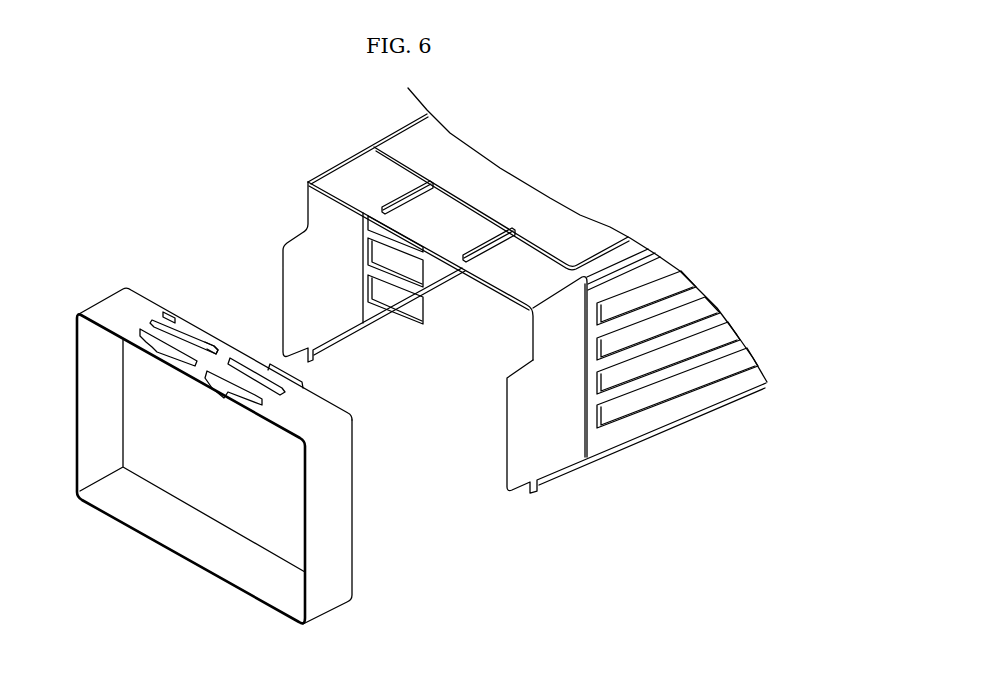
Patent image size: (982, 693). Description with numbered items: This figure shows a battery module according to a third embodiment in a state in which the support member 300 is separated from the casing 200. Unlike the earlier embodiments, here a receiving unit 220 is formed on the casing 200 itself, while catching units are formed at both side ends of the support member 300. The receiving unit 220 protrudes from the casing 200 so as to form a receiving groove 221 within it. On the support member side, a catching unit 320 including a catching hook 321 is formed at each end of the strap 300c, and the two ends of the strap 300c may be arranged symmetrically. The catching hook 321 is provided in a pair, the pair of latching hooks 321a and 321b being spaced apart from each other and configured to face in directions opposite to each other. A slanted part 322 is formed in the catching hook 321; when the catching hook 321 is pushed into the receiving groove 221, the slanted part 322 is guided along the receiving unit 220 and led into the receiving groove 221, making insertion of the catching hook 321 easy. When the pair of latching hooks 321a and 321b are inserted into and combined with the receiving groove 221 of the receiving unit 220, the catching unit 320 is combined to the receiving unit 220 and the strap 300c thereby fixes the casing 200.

The casing 200 is at (633, 420).
The receiving unit 220 is at (398, 198).
The receiving groove 221 is at (413, 206).
The support member 300 is at (94, 240).
The strap 300c is at (93, 306).
The catching unit 320 is at (140, 367).
The catching hook 321 is at (200, 402).
The latching hook 321a is at (175, 364).
The latching hook 321b is at (200, 336).
The slanted part 322 is at (214, 342).